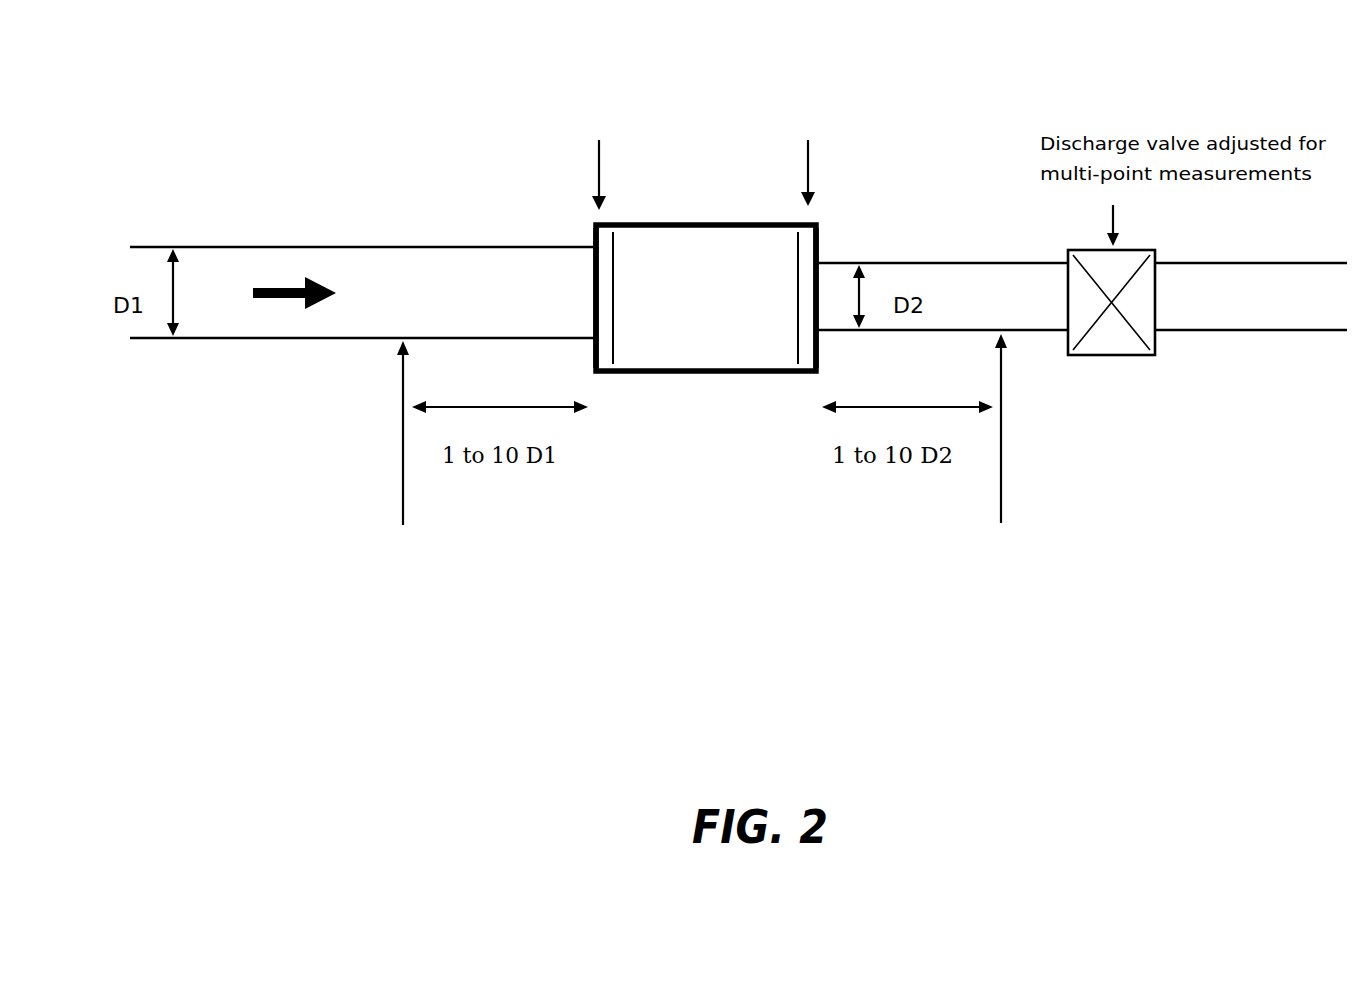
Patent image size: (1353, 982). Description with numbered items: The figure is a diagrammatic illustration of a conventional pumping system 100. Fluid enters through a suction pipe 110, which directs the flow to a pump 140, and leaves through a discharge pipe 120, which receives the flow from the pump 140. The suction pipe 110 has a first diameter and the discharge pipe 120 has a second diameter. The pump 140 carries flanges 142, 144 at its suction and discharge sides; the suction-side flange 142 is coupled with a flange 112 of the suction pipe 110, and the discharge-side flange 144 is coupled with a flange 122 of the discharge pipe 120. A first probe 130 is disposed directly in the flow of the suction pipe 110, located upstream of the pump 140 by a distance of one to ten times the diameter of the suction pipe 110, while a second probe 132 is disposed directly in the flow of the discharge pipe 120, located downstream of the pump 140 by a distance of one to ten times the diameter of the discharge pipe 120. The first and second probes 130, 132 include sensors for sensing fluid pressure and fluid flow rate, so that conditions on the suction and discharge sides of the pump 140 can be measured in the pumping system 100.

The pumping system 100 is at (738, 279).
The suction pipe 110 is at (373, 243).
The flange of the suction pipe 112 is at (588, 226).
The discharge pipe 120 is at (1003, 260).
The flange of the discharge pipe 122 is at (824, 226).
The first probe 130 is at (404, 457).
The second probe 132 is at (1006, 453).
The pump 140 is at (706, 298).
The flange 142 is at (598, 156).
The flange 144 is at (811, 154).